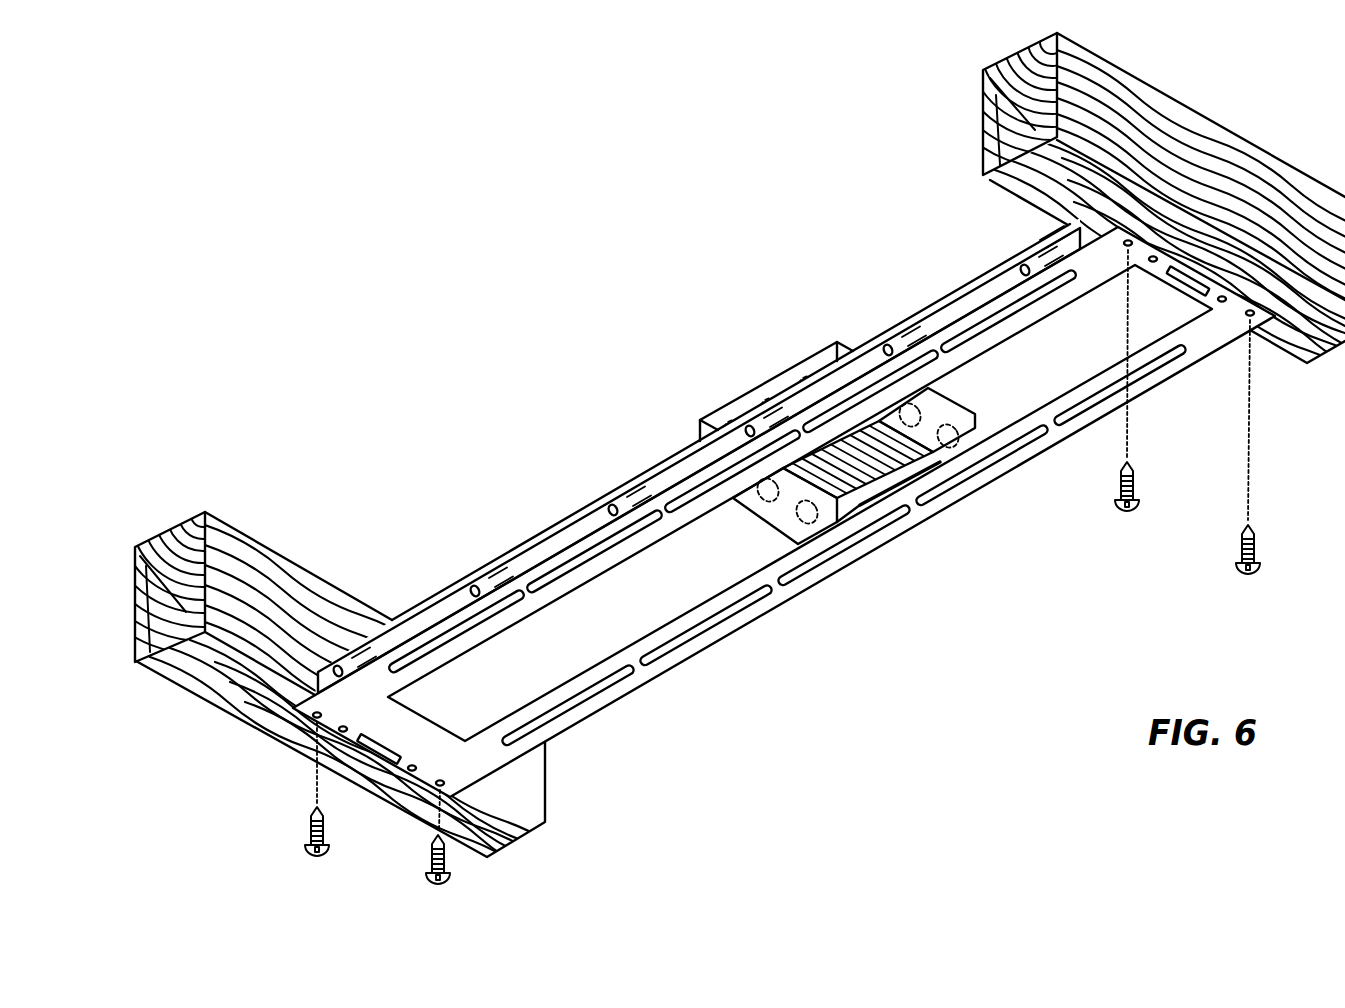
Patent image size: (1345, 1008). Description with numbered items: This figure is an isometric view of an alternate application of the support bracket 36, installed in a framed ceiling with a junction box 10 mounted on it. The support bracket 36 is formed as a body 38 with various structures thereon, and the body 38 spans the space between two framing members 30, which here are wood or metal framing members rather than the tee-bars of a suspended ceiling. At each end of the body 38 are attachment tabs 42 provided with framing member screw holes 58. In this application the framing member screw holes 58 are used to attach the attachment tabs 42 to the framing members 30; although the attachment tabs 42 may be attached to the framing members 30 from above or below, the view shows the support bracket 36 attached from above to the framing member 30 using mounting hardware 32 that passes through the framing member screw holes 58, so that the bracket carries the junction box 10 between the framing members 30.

The electrical box 10 is at (837, 438).
The framing member 30 is at (704, 465).
The mounting hardware 32 is at (744, 568).
The support bracket 36 is at (699, 458).
The body 38 is at (784, 512).
The attachment tab 42 is at (784, 577).
The framing member screw hole 58 is at (729, 563).